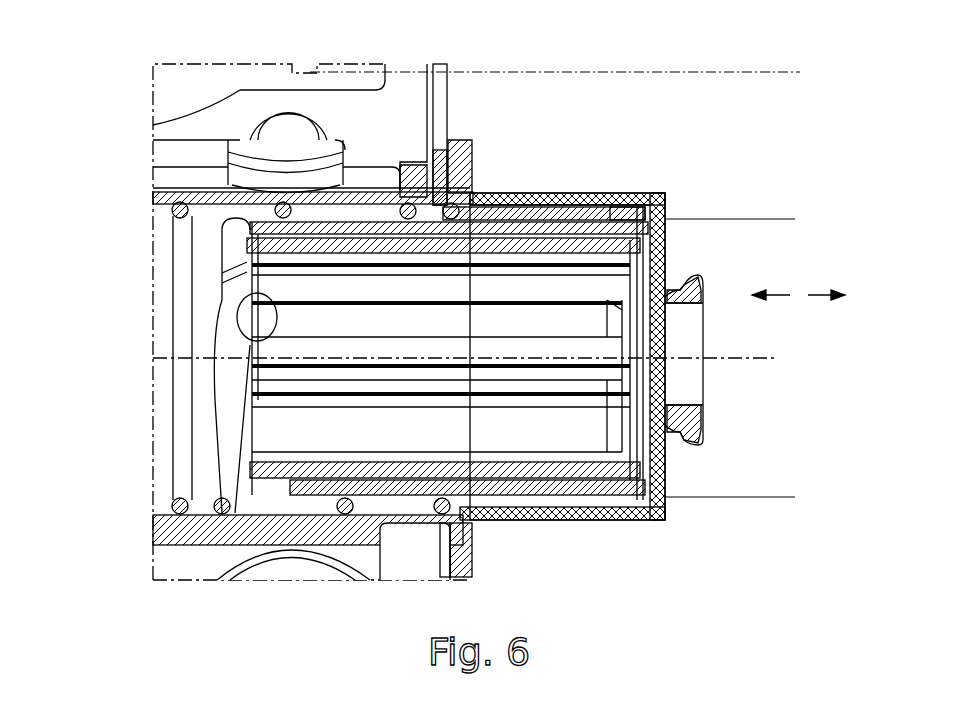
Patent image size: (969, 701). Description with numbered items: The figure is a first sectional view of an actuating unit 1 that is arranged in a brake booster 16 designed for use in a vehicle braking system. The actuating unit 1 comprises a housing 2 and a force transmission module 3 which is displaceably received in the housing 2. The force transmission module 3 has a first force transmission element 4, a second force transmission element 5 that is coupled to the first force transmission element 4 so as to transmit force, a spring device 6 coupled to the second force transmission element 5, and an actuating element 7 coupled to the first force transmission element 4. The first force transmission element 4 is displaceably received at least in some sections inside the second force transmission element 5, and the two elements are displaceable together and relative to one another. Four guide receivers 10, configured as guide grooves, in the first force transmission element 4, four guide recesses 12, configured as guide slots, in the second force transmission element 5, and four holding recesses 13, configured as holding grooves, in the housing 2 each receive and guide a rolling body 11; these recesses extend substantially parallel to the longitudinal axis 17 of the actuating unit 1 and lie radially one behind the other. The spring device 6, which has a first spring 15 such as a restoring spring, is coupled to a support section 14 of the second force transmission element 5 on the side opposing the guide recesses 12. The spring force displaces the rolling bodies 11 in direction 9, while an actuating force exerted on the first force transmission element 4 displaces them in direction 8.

The actuating unit 1 is at (745, 155).
The housing 2 is at (667, 398).
The force transmission module 3 is at (540, 188).
The first force transmission element 4 is at (640, 210).
The second force transmission element 5 is at (480, 205).
The spring device 6 is at (175, 290).
The actuating element 7 is at (525, 465).
The direction 8 is at (783, 293).
The direction 9 is at (830, 293).
The guide receiver 10 is at (442, 66).
The rolling body 11 is at (555, 215).
The guide recess 12 is at (590, 215).
The holding recess 13 is at (507, 207).
The support section 14 is at (470, 530).
The first spring 15 is at (180, 422).
The brake booster 16 is at (158, 100).
The longitudinal axis 17 is at (777, 358).